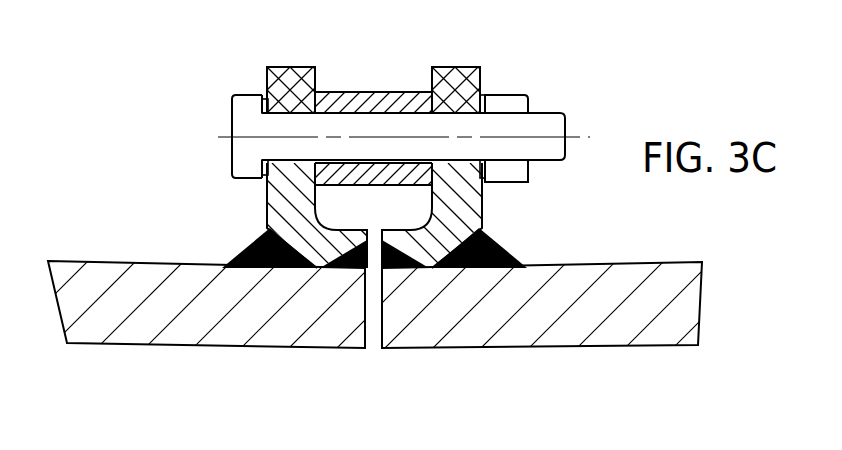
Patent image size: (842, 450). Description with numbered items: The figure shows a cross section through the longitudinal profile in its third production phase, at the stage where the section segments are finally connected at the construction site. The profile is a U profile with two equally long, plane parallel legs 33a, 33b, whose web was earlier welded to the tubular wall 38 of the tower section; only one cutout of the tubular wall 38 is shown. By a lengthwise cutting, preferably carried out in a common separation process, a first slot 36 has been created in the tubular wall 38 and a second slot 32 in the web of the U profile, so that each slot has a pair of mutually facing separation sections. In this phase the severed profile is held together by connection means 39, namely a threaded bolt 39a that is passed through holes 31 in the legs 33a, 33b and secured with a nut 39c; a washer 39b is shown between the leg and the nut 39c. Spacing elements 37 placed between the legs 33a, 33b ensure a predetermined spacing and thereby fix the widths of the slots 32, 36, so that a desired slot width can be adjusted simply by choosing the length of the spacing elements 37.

The holes 31 is at (294, 98).
The second slot 32 is at (380, 264).
The leg 33a is at (457, 82).
The leg 33b is at (280, 215).
The first slot 36 is at (372, 346).
The spacing elements 37 is at (376, 103).
The tubular wall 38 is at (633, 292).
The connection means 39 is at (580, 88).
The threaded bolt 39a is at (243, 120).
The washer 39b is at (481, 96).
The nut 39c is at (505, 172).